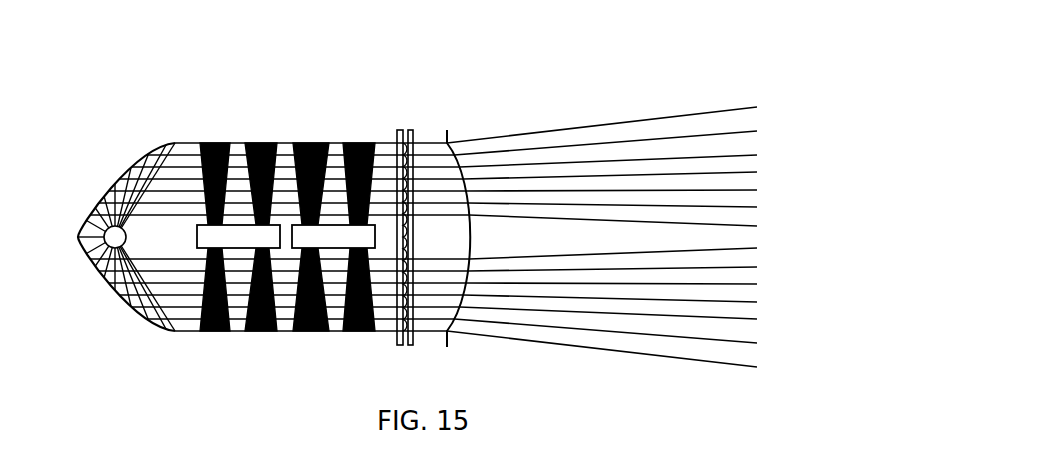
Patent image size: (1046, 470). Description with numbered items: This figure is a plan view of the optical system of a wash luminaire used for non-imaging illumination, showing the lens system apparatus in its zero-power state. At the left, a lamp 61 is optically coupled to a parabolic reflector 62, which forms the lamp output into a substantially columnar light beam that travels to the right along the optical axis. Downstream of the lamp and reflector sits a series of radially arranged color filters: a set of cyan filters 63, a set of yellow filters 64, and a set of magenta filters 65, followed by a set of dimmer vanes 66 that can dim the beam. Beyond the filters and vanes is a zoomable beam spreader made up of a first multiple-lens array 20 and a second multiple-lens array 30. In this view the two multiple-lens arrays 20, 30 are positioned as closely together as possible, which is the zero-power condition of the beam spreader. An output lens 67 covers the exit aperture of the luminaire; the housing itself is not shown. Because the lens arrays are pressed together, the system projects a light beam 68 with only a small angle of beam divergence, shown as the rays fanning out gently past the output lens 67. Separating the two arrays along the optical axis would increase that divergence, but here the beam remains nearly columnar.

The first multiple-lens array 20 is at (400, 130).
The second multiple-lens array 30 is at (412, 130).
The lamp 61 is at (104, 238).
The parabolic reflector 62 is at (102, 183).
The set of cyan filters 63 is at (217, 142).
The set of yellow filters 64 is at (262, 142).
The set of magenta filters 65 is at (307, 142).
The set of dimmer vanes 66 is at (353, 142).
The output lens 67 is at (447, 137).
The light beam 68 is at (553, 128).